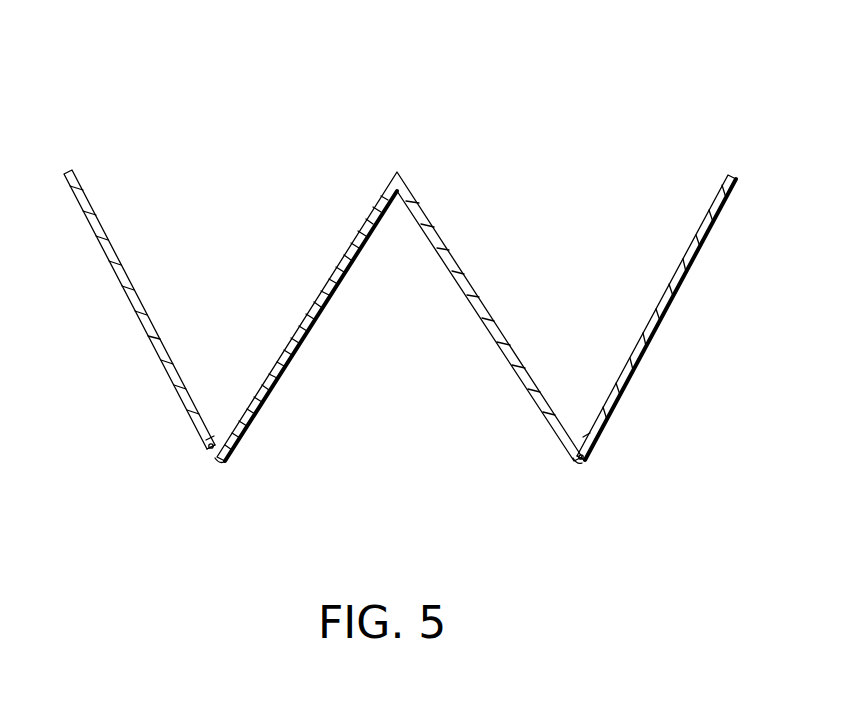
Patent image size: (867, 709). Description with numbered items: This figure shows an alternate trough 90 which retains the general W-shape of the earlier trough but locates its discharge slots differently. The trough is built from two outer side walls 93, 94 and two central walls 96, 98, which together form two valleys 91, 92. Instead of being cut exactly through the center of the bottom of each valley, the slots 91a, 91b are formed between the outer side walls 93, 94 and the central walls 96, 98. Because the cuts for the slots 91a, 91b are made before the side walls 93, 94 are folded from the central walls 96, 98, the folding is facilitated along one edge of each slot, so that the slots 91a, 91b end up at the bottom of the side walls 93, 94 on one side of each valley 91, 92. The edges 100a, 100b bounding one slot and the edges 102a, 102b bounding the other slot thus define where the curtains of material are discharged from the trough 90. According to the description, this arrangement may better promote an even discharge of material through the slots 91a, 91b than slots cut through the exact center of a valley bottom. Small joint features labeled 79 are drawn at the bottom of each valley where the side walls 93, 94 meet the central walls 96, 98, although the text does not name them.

The alternate trough 90 is at (393, 276).
The valley 91 is at (316, 331).
The valley 92 is at (571, 325).
The outer side wall 93 is at (115, 274).
The central wall 96 is at (301, 317).
The central wall 98 is at (476, 285).
The outer side wall 94 is at (666, 310).
The edge 100a is at (212, 438).
The edge 100b is at (216, 460).
The edge 102a is at (587, 435).
The edge 102b is at (584, 463).
The pivot pin 79 is at (208, 449).
The slot 91a is at (203, 462).
The slot 91b is at (595, 455).